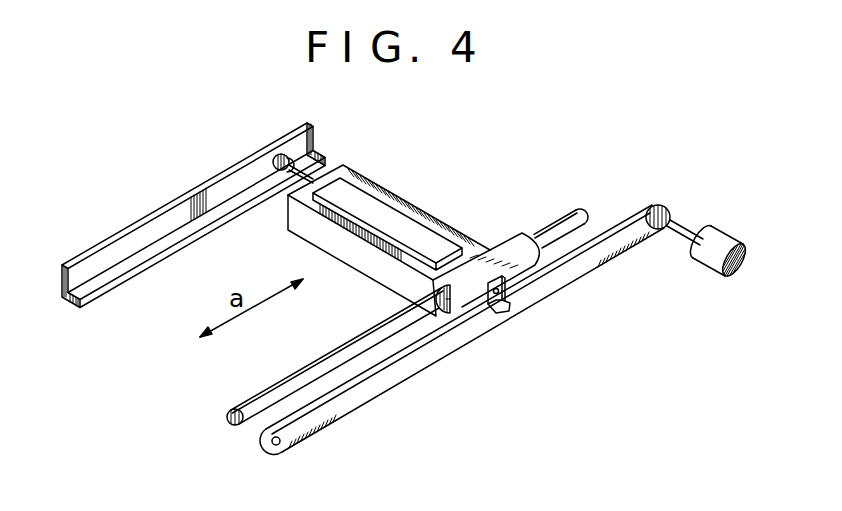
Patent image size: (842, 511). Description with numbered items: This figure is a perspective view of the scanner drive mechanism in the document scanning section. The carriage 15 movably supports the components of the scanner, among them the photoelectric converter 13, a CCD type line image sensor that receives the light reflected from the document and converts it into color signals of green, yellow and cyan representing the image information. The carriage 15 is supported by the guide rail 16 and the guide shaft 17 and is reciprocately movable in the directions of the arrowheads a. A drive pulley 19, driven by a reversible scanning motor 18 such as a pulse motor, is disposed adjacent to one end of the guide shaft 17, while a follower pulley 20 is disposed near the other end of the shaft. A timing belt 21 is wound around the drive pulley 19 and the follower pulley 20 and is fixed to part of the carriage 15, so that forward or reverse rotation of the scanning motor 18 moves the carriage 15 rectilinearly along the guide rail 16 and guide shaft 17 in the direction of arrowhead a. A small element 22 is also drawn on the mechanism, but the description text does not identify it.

The photoelectric converter 13 is at (373, 209).
The carriage 15 is at (447, 238).
The guide rail 16 is at (249, 166).
The guide shaft 17 is at (555, 224).
The scanning motor 18 is at (703, 256).
The drive pulley 19 is at (667, 207).
The follower pulley 20 is at (282, 448).
The timing belt 21 is at (423, 372).
The clamp 22 is at (506, 305).